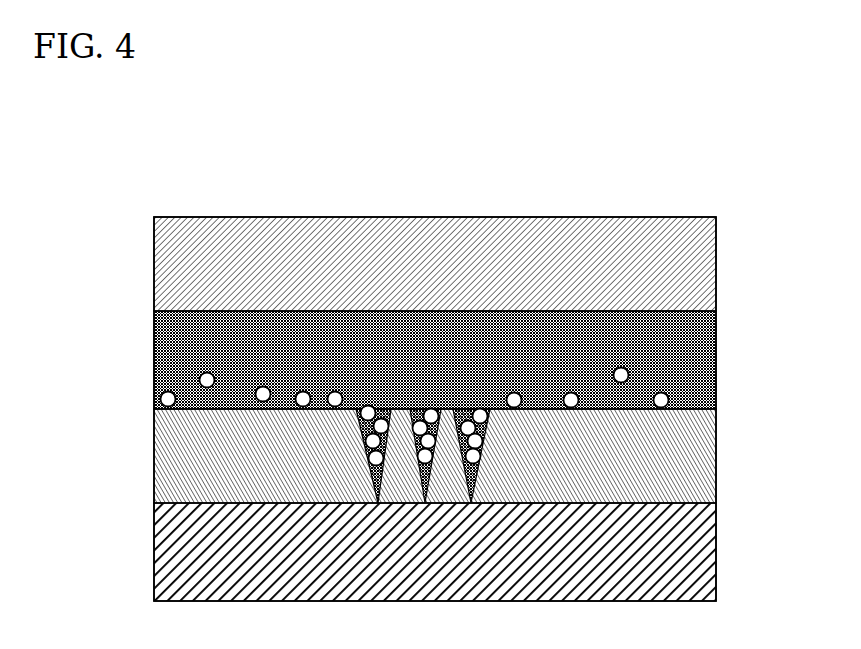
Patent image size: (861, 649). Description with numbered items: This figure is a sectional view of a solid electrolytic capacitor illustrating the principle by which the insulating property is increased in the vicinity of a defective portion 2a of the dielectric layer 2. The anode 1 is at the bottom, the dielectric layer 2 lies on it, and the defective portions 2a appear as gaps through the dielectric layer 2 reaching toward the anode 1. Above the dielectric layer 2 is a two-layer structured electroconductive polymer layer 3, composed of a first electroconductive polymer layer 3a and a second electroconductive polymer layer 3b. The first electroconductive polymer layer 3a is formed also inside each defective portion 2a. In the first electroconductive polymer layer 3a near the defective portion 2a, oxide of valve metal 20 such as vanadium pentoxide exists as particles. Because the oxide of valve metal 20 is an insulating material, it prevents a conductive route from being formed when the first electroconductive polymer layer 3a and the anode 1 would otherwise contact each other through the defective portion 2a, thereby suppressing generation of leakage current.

The anode 1 is at (688, 557).
The dielectric layer 2 is at (688, 452).
The defective portion 2a is at (353, 447).
The electroconductive polymer layer 3 is at (494, 313).
The first electroconductive polymer layer 3a is at (471, 360).
The second electroconductive polymer layer 3b is at (692, 263).
The oxide of valve metal 20 is at (322, 388).